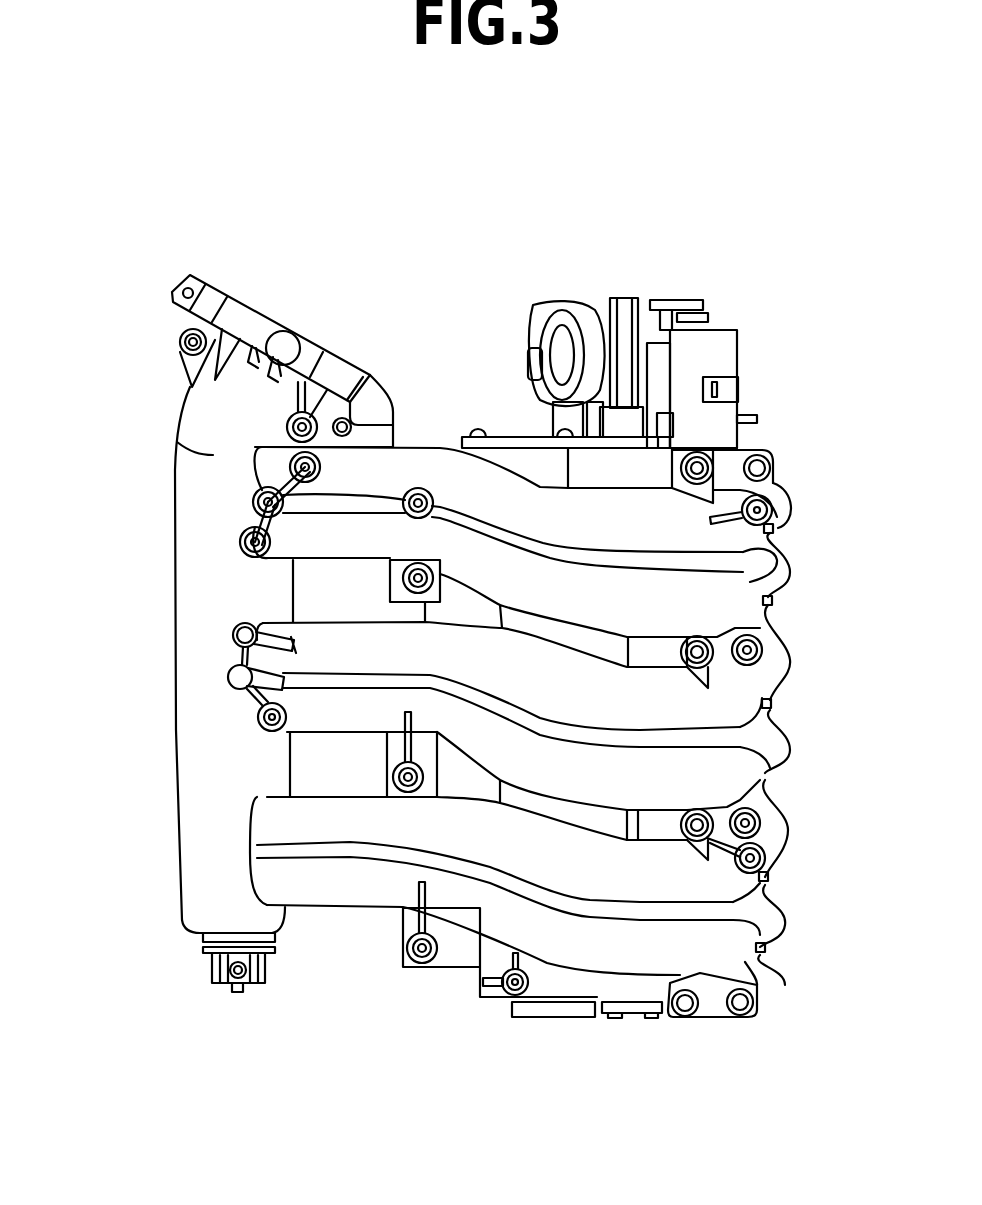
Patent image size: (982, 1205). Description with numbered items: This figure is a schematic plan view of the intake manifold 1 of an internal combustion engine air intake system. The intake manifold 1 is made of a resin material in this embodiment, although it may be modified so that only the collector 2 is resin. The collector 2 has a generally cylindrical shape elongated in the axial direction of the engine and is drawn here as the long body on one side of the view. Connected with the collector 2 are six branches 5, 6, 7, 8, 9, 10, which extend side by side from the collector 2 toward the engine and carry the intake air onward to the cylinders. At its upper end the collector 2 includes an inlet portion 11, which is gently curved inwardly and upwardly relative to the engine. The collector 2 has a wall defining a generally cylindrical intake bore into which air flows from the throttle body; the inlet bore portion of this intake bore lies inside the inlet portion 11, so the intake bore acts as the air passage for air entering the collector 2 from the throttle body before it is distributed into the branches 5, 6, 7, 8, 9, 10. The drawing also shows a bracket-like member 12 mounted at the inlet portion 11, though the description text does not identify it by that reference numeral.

The intake manifold 1 is at (166, 925).
The collector 2 is at (193, 582).
The branch 5 is at (733, 502).
The branch 6 is at (737, 590).
The branch 7 is at (737, 688).
The branch 8 is at (737, 782).
The branch 9 is at (723, 883).
The branch 10 is at (730, 962).
The inlet portion 11 is at (177, 442).
The throttle body mounting bracket 12 is at (235, 320).